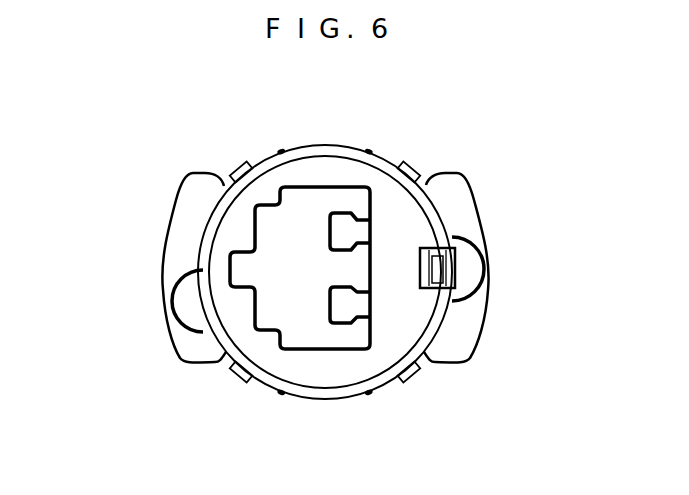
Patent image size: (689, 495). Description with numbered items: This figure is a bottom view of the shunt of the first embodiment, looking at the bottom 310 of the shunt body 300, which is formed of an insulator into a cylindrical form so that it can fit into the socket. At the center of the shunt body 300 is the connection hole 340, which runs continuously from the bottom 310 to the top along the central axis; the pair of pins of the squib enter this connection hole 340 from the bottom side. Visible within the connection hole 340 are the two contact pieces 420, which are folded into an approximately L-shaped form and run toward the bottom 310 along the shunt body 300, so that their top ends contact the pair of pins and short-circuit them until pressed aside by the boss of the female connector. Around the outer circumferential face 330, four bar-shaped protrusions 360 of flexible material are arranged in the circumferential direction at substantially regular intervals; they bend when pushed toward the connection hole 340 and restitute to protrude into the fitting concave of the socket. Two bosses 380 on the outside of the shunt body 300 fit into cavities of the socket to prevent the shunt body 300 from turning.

The shunt body 300 is at (106, 128).
The bottom 310 is at (415, 228).
The outer circumferential face 330 is at (350, 394).
The connection hole 340 is at (322, 350).
The protrusion 360 is at (237, 160).
The bosses 380 is at (190, 305).
The contact pieces 420 is at (326, 305).